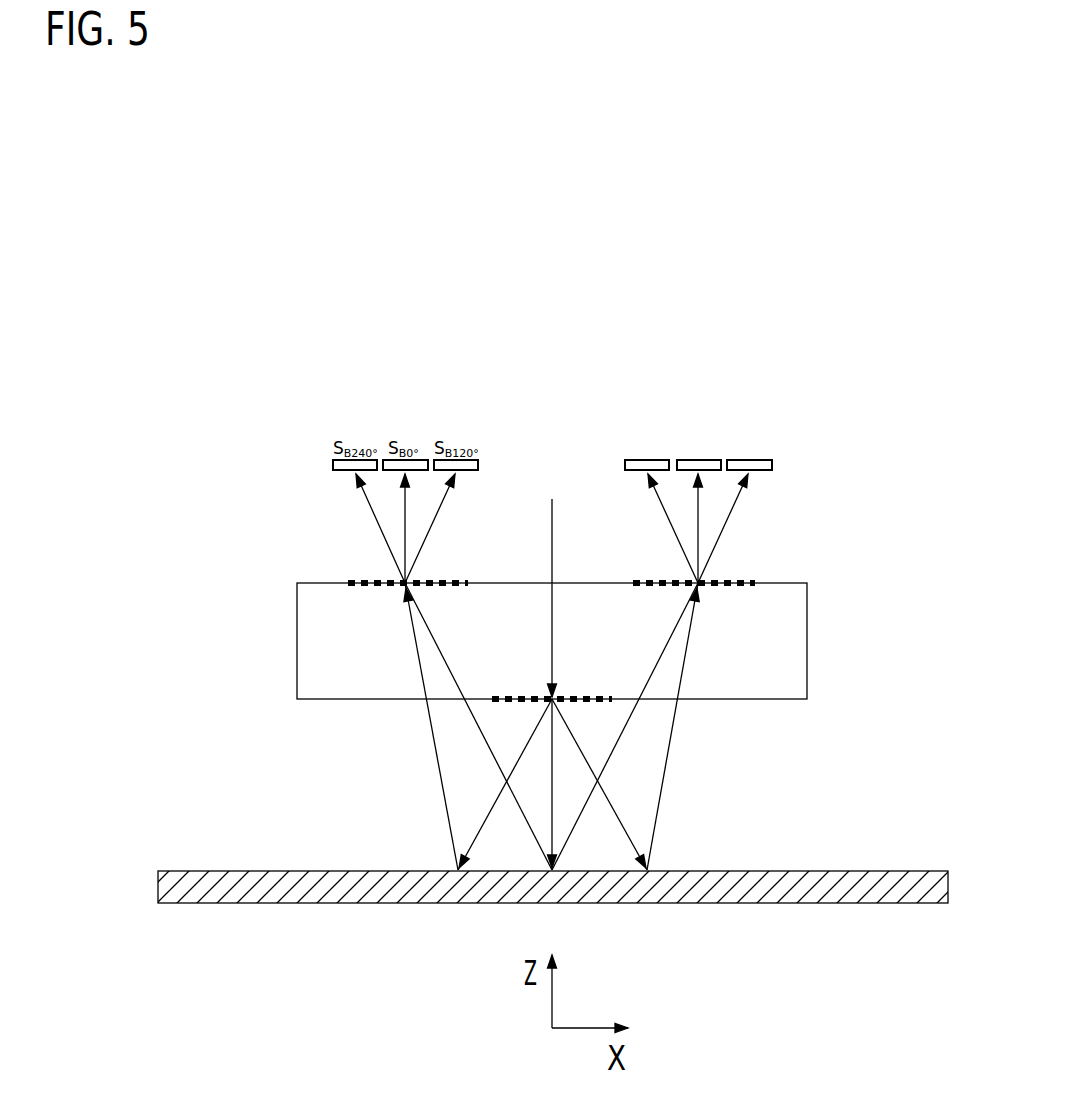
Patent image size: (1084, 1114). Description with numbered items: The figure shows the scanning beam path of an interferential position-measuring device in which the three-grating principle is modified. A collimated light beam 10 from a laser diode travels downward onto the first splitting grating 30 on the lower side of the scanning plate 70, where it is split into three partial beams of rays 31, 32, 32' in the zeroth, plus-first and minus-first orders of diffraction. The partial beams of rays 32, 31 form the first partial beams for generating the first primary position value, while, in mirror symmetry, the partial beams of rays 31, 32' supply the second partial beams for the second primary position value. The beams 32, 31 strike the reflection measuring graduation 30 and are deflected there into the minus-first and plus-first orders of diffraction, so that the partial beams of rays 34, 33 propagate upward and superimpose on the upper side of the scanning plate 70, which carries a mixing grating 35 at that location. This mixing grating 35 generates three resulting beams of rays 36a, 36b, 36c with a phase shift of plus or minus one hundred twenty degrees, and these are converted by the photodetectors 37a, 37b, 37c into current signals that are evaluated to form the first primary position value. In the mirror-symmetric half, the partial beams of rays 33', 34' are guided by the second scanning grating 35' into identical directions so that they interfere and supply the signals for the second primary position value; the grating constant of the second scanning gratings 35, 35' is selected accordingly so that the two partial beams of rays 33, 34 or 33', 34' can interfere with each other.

The collimated light beam 10 is at (552, 551).
The first splitting grating / reflection measuring graduation 30 is at (588, 698).
The partial beam of rays (0th order of diffraction) 31 is at (553, 818).
The partial beam of rays (+1st order of diffraction) 32 is at (648, 784).
The partial beam of rays (−1st order of diffraction) 32' is at (447, 784).
The partial beam of rays deflected at measuring graduation 33 is at (653, 726).
The mirror-symmetric partial beam of rays deflected at measuring graduation 33' is at (451, 726).
The partial beam of rays deflected at measuring graduation 34 is at (707, 726).
The mirror-symmetric partial beam of rays deflected at measuring graduation 34' is at (397, 726).
The mixing grating (second scanning grating) 35 is at (741, 562).
The second scanning grating 35' is at (376, 543).
The resulting beam of rays 36a is at (660, 505).
The resulting beam of rays 36b is at (698, 533).
The resulting beam of rays 36c is at (738, 495).
The photodetector 37a is at (625, 460).
The photodetector 37b is at (720, 462).
The photodetector 37c is at (763, 465).
The scanning plate 70 is at (783, 652).